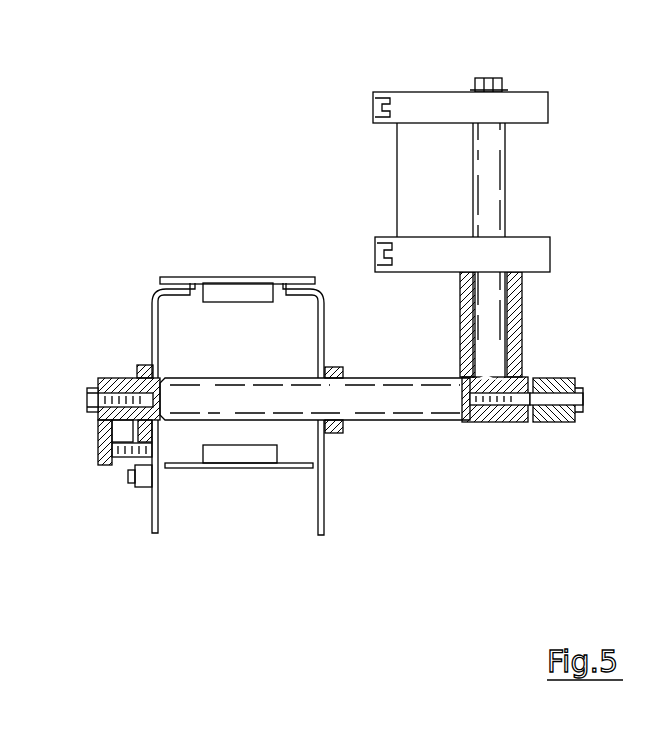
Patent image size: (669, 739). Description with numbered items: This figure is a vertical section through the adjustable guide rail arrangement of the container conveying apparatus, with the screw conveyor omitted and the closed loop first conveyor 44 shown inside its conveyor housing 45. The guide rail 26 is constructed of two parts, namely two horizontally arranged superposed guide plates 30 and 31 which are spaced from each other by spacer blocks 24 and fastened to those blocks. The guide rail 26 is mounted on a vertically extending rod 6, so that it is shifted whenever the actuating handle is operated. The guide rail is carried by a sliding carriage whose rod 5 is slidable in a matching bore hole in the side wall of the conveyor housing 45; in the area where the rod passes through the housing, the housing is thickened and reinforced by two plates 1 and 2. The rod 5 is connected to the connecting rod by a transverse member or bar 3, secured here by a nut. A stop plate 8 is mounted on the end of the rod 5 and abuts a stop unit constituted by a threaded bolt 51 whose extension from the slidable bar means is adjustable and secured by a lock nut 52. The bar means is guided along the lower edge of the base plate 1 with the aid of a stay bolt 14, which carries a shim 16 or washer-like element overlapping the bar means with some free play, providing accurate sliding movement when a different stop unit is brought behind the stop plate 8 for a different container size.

The reinforcement plate 1 is at (137, 365).
The reinforcement plate 2 is at (340, 370).
The transverse member or bar 3 is at (545, 378).
The rod 5 is at (418, 400).
The vertically extending rod 6 is at (495, 177).
The stop plate 8 is at (98, 463).
The stay bolt 14 is at (148, 490).
The shim 16 is at (133, 487).
The spacer block 24 is at (417, 147).
The guide rail 26 is at (375, 190).
The upper guide plate 30 is at (415, 107).
The lower guide plate 31 is at (415, 262).
The first conveyor 44 is at (207, 295).
The conveyor housing 45 is at (140, 300).
The threaded bolt 51 is at (110, 465).
The lock nut 52 is at (124, 465).